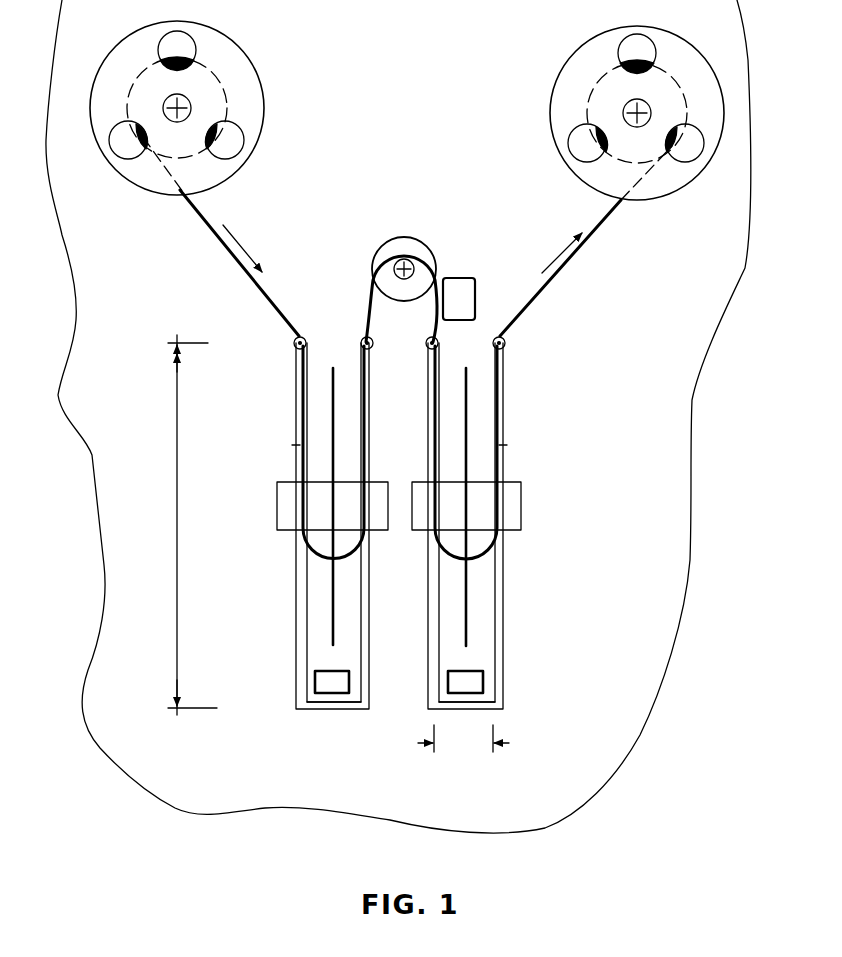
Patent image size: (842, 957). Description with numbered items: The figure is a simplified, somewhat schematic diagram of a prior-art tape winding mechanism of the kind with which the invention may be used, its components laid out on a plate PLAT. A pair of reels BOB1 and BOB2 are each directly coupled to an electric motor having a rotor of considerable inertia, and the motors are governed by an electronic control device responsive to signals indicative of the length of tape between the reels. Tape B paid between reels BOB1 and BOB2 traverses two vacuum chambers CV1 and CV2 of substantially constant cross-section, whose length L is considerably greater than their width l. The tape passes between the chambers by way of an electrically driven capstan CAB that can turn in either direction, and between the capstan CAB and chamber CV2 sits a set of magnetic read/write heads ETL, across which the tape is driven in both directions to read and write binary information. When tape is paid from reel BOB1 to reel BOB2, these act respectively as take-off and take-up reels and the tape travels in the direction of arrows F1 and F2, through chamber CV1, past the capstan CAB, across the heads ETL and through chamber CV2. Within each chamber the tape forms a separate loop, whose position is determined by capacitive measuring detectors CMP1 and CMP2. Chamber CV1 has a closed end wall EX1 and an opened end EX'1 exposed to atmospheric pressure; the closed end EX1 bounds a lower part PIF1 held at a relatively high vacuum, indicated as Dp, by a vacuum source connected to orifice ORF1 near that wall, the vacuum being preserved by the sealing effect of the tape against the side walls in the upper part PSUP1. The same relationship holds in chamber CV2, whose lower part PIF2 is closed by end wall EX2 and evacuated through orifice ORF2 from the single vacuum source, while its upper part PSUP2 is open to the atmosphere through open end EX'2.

The plate PLAT is at (625, 762).
The reel BOB1 is at (264, 99).
The reel BOB2 is at (551, 101).
The tape B is at (407, 348).
The arrow F1 is at (257, 252).
The arrow F2 is at (549, 256).
The capstan CAB is at (406, 238).
The magnetic read/write heads ETL is at (456, 277).
The vacuum chamber CV1 is at (296, 415).
The vacuum chamber CV2 is at (503, 415).
The upper part PSUP1 is at (296, 465).
The upper part PSUP2 is at (503, 465).
The capacitive measuring detector CMP1 is at (277, 505).
The capacitive measuring detector CMP2 is at (521, 505).
The lower part PIF1 is at (296, 604).
The lower part PIF2 is at (503, 604).
The vacuum Dp is at (320, 656).
The orifice ORF1 is at (315, 684).
The orifice ORF2 is at (483, 683).
The closed end wall EX1 is at (318, 710).
The end wall EX2 is at (480, 710).
The opened end EX'1 is at (360, 360).
The open end EX'2 is at (495, 360).
The length L is at (183, 525).
The width l is at (463, 747).